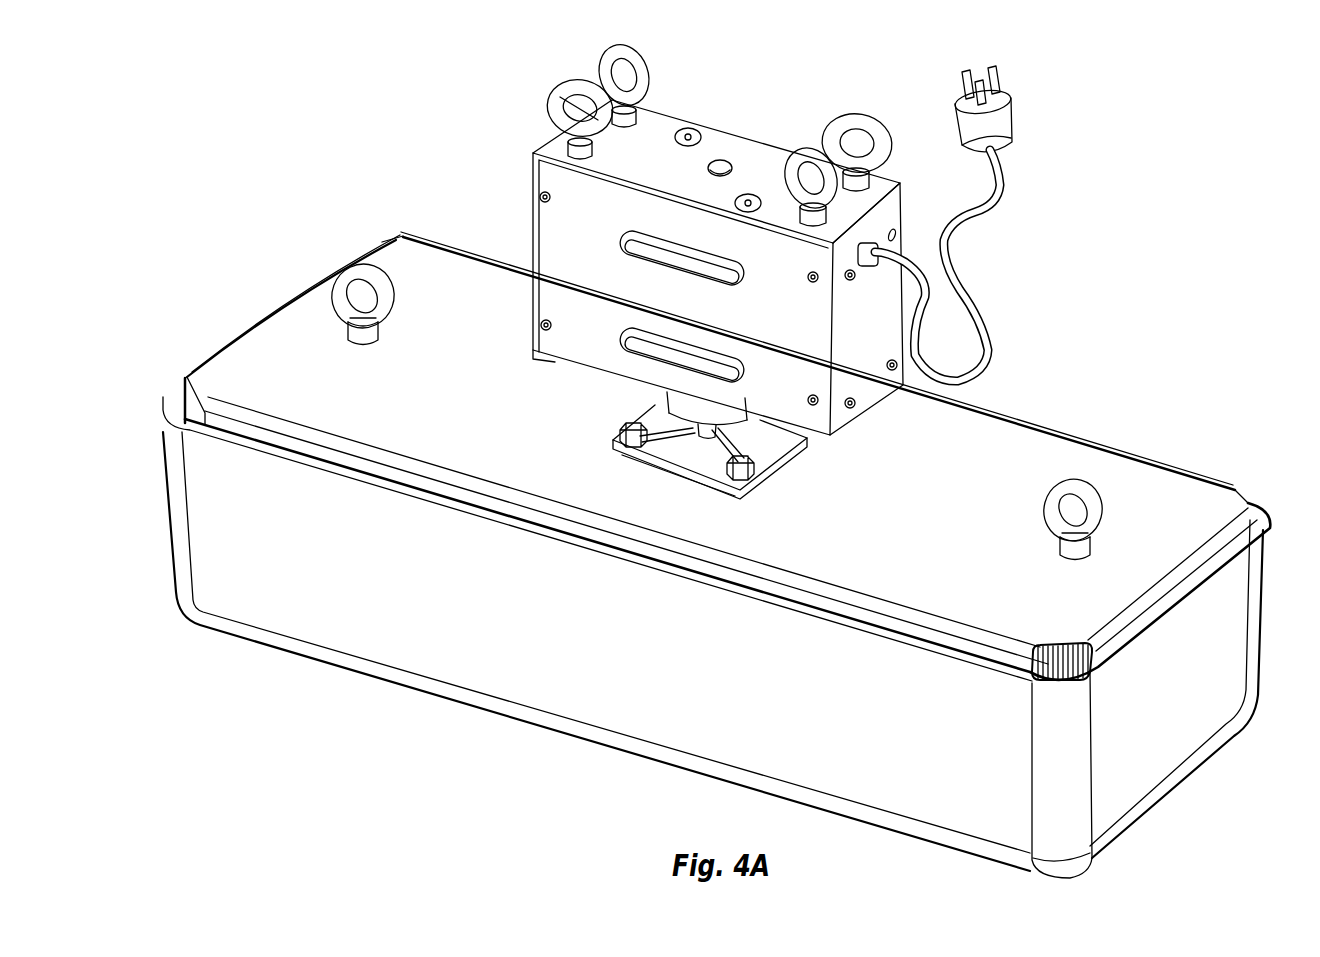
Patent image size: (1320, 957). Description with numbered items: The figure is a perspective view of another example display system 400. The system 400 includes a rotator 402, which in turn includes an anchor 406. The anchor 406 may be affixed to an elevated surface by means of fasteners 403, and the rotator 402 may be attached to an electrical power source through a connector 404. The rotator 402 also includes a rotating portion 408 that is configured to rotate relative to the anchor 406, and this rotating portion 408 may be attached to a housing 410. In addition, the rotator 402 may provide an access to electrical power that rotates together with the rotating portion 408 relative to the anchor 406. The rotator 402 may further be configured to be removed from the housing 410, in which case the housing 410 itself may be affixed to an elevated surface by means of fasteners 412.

The display system 400 is at (1186, 146).
The rotator 402 is at (533, 210).
The fasteners 403 is at (597, 64).
The connector 404 is at (1013, 122).
The anchor 406 is at (612, 303).
The rotating portion 408 is at (767, 455).
The housing 410 is at (612, 650).
The fasteners 412 is at (361, 264).